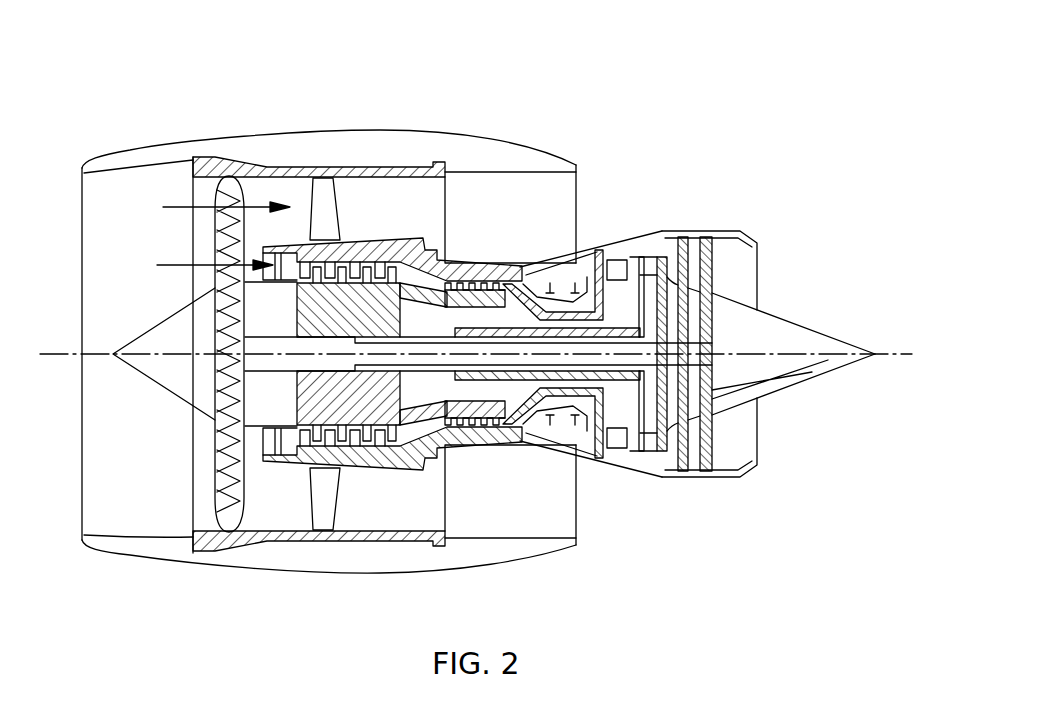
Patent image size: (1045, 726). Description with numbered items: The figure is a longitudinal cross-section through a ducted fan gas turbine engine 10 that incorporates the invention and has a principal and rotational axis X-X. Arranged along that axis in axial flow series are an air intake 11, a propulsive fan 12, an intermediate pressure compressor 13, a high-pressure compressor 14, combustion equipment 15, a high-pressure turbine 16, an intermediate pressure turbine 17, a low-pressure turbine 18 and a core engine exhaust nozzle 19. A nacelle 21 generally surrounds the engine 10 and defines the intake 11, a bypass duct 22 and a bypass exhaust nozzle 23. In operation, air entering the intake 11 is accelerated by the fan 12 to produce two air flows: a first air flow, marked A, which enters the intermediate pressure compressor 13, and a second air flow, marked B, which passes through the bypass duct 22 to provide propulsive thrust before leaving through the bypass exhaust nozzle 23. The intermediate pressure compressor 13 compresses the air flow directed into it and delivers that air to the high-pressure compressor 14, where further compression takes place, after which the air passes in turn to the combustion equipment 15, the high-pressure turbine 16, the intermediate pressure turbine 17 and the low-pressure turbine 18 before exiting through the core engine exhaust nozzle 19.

The ducted fan gas turbine engine 10 is at (482, 304).
The air intake 11 is at (138, 181).
The propulsive fan 12 is at (213, 480).
The intermediate pressure compressor 13 is at (363, 465).
The high-pressure compressor 14 is at (477, 282).
The combustion equipment 15 is at (528, 422).
The high-pressure turbine 16 is at (593, 447).
The intermediate pressure turbine 17 is at (627, 260).
The low-pressure turbine 18 is at (653, 468).
The core engine exhaust nozzle 19 is at (750, 232).
The nacelle 21 is at (330, 133).
The bypass duct 22 is at (542, 210).
The bypass exhaust nozzle 23 is at (578, 164).